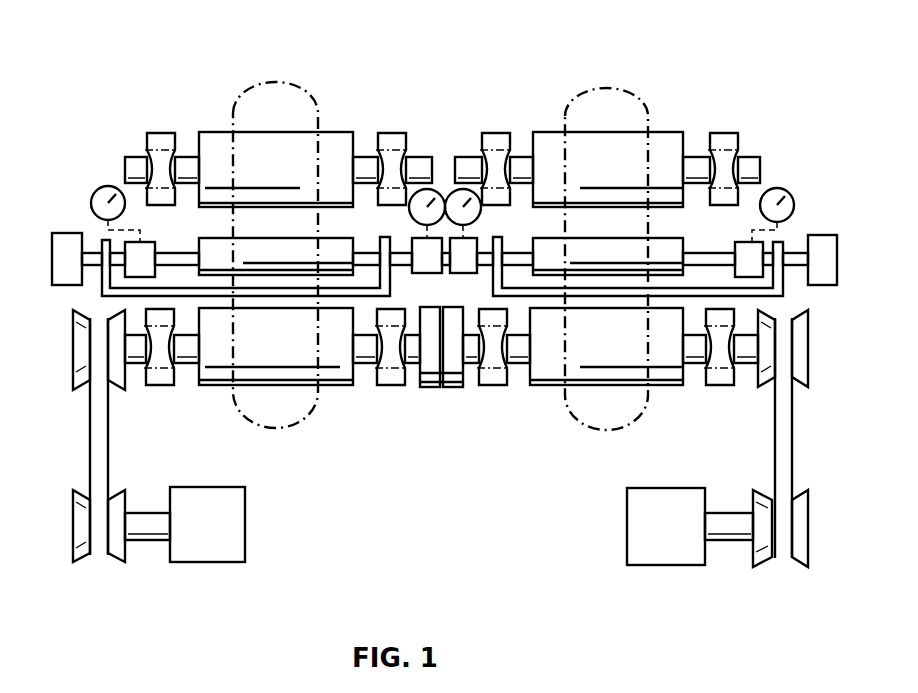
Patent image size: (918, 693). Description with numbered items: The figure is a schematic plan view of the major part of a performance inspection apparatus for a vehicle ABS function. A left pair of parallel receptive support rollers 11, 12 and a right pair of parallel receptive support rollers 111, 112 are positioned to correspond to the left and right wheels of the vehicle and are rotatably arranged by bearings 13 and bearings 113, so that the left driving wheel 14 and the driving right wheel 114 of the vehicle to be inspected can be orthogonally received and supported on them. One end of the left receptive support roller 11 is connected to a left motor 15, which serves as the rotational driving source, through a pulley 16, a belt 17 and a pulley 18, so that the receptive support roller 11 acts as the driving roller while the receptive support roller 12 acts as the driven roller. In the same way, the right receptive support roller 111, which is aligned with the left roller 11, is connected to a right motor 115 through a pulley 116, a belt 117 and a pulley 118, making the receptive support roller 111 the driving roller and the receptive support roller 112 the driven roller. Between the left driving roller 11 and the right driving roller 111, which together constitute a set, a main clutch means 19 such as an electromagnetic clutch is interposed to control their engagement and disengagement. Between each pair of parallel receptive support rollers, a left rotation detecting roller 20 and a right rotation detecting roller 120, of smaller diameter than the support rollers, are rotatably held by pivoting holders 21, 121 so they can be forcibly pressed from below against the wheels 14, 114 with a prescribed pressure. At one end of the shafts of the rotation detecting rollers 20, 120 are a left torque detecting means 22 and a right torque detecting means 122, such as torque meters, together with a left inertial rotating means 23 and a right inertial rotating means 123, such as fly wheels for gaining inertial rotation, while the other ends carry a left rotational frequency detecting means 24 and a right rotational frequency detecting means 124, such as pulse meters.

The receptive support roller 11 is at (346, 368).
The receptive support roller 12 is at (340, 140).
The bearings 13 is at (163, 132).
The left driving wheel 14 is at (283, 82).
The left motor 15 is at (235, 545).
The pulley 16 is at (78, 367).
The belt 17 is at (97, 420).
The pulley 18 is at (78, 530).
The main clutch means 19 is at (442, 387).
The left rotation detecting roller 20 is at (252, 247).
The pivoting holder 21 is at (102, 293).
The left torque detecting means 22 is at (155, 242).
The left inertial rotating means 23 is at (64, 233).
The left rotational frequency detecting means 24 is at (420, 263).
The receptive support roller 111 is at (662, 383).
The receptive support roller 112 is at (668, 138).
The bearings 113 is at (493, 147).
The driving right wheel 114 is at (617, 88).
The right motor 115 is at (640, 558).
The pulley 116 is at (802, 338).
The belt 117 is at (790, 420).
The pulley 118 is at (757, 552).
The right rotation detecting roller 120 is at (655, 245).
The pivoting holder 121 is at (787, 290).
The right torque detecting means 122 is at (763, 247).
The right inertial rotating means 123 is at (823, 237).
The right rotational frequency detecting means 124 is at (457, 265).